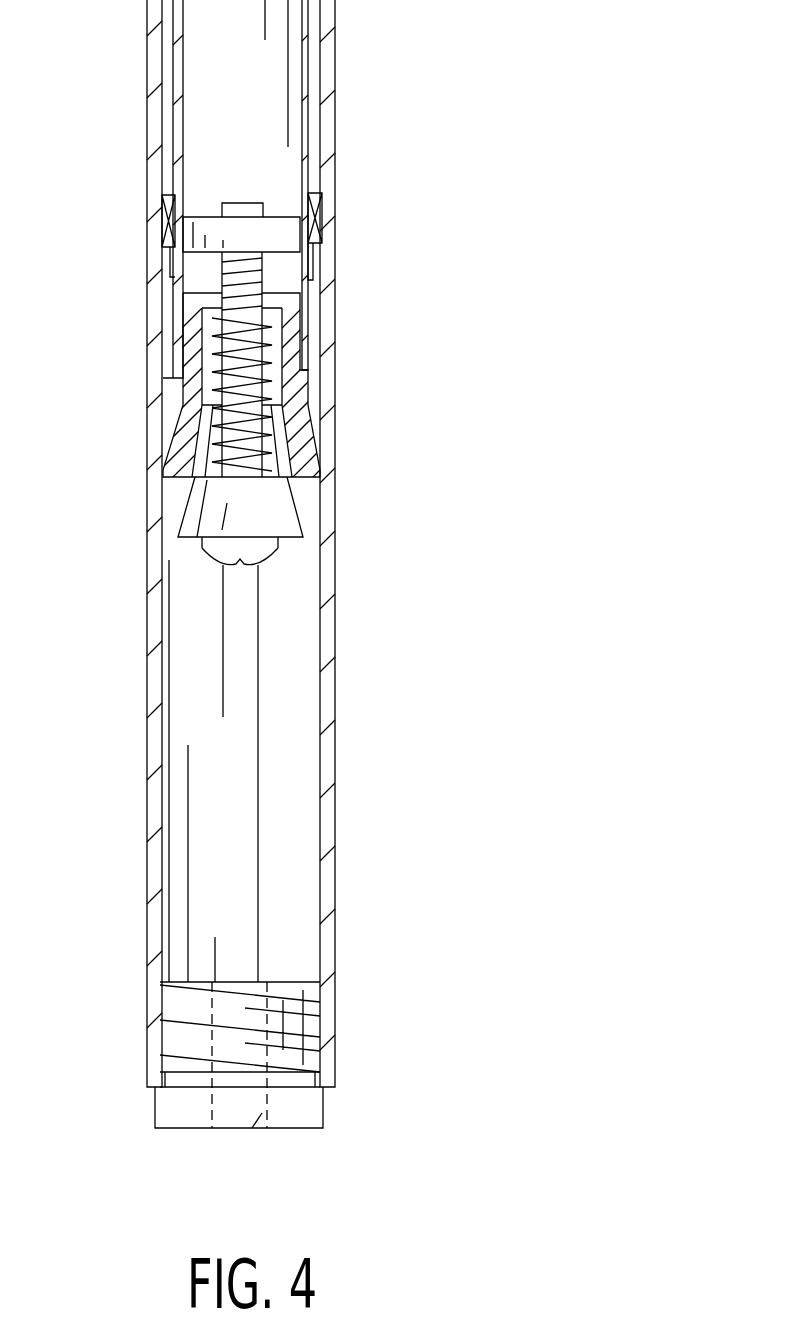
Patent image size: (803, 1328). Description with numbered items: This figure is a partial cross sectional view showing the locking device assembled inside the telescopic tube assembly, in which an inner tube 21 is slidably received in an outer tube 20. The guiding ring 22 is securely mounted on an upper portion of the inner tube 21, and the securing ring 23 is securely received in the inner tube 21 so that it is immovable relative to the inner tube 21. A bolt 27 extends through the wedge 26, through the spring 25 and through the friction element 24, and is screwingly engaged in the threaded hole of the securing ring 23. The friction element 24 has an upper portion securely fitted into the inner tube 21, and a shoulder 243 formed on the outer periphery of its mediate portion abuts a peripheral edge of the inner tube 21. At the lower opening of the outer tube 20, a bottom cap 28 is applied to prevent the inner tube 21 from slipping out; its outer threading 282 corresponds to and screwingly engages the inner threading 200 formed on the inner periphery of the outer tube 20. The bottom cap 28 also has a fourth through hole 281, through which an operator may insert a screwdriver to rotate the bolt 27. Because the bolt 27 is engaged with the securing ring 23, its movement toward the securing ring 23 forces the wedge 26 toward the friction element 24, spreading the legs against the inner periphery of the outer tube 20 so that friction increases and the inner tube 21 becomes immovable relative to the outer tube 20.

The outer tube 20 is at (323, 877).
The inner tube 21 is at (305, 88).
The guiding ring 22 is at (168, 220).
The securing ring 23 is at (288, 230).
The friction element 24 is at (303, 440).
The shoulder 243 is at (303, 370).
The spring 25 is at (218, 345).
The wedge 26 is at (290, 522).
The bolt 27 is at (243, 208).
The bottom cap 28 is at (313, 1108).
The fourth through hole 281 is at (248, 1135).
The outer threading 282 is at (298, 1030).
The inner threading 200 is at (250, 787).